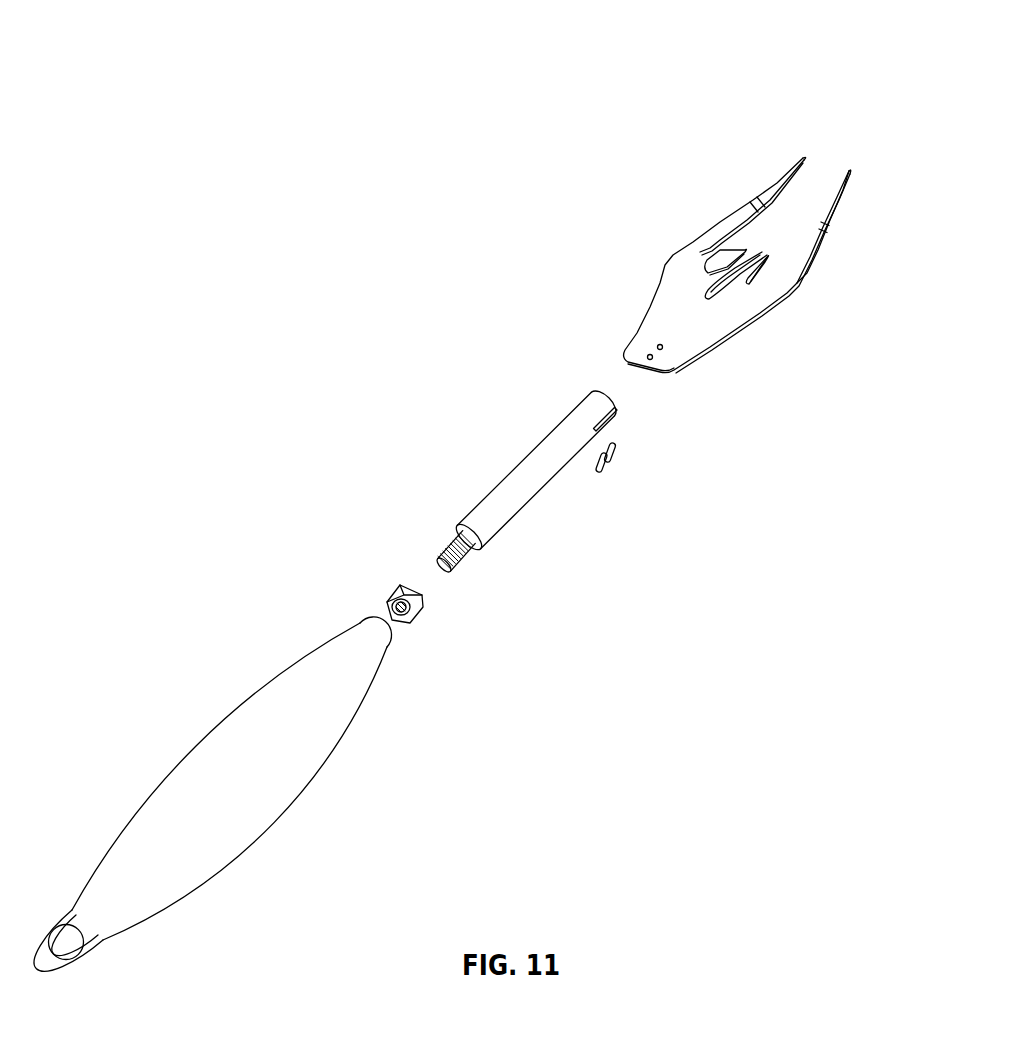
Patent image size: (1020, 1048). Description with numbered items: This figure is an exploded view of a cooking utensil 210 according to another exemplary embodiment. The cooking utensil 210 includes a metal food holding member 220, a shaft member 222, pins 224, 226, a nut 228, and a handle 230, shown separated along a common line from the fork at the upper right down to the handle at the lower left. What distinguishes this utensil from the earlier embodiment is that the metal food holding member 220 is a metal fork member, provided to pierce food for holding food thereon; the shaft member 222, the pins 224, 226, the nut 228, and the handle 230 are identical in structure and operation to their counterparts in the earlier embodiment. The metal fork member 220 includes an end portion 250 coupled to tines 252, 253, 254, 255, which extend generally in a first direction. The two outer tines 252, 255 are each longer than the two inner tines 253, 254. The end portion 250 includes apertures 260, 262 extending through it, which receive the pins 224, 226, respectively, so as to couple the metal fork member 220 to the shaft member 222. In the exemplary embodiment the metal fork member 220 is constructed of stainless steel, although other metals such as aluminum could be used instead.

The cooking utensil 210 is at (745, 68).
The metal food holding member 220 is at (763, 303).
The shaft member 222 is at (513, 523).
The pin 224 is at (604, 470).
The pin 226 is at (613, 460).
The nut 228 is at (415, 617).
The handle 230 is at (233, 838).
The end portion 250 is at (693, 337).
The tine 252 is at (780, 177).
The tine 253 is at (740, 250).
The tine 254 is at (768, 258).
The tine 255 is at (836, 213).
The aperture 260 is at (650, 360).
The aperture 262 is at (661, 349).